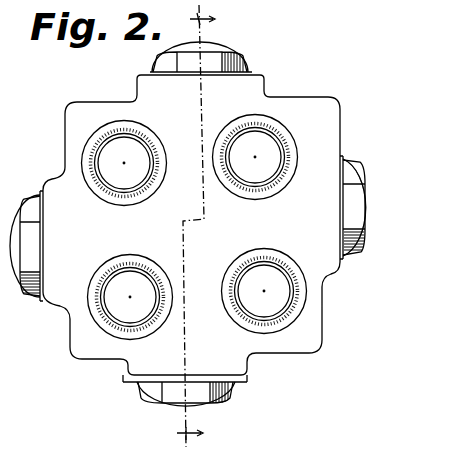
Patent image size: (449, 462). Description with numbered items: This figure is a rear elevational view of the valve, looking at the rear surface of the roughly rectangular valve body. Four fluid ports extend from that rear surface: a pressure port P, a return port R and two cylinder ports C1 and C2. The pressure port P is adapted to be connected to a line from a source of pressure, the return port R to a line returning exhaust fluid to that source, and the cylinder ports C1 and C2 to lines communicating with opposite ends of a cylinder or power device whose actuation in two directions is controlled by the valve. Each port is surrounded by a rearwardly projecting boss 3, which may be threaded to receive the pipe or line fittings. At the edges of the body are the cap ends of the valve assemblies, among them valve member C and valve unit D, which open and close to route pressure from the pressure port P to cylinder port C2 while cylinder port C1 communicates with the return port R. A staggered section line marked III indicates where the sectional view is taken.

The rearwardly projecting bosses 3 is at (228, 137).
The valve member C is at (155, 408).
The cylinder port C1 is at (118, 143).
The cylinder port C2 is at (275, 299).
The pressure port P is at (274, 147).
The return port R is at (115, 311).
The valve unit D is at (368, 162).
The section line III- III is at (204, 226).